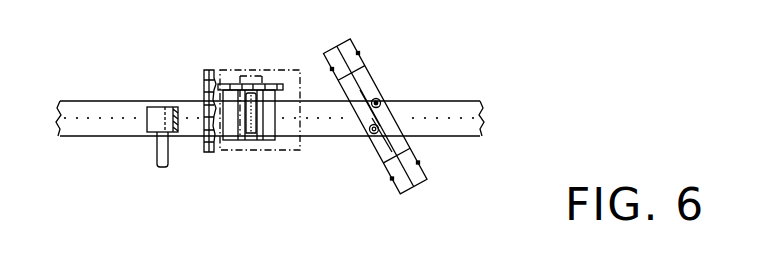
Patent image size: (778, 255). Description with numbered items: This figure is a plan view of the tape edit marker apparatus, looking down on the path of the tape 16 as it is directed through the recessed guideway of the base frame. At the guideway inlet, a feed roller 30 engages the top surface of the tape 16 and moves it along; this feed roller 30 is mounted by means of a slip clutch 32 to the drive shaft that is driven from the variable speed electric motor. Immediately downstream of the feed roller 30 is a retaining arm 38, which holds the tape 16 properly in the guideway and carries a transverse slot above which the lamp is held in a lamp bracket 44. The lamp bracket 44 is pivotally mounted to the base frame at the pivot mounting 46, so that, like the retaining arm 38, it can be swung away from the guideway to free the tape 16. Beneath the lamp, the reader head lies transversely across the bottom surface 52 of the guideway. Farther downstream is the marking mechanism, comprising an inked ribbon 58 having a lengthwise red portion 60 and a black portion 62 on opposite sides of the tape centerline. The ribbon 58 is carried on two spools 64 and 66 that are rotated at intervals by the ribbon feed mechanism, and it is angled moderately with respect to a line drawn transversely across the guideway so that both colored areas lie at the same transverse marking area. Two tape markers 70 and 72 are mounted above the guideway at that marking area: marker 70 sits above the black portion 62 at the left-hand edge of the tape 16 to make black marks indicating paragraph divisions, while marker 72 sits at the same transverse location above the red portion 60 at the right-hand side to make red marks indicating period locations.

The tape 16 is at (76, 137).
The feed roller 30 is at (153, 122).
The slip clutch 32 is at (168, 157).
The retaining arm 38 is at (290, 143).
The lamp bracket 44 is at (267, 133).
The pivot mounting 46 is at (268, 87).
The bottom surface of the guideway 52 is at (238, 133).
The inked ribbon 58 is at (370, 73).
The red portion 60 is at (383, 148).
The black portion 62 is at (370, 88).
The spool 64 is at (350, 55).
The spool 66 is at (420, 181).
The tape marker 70 is at (380, 103).
The tape marker 72 is at (378, 130).